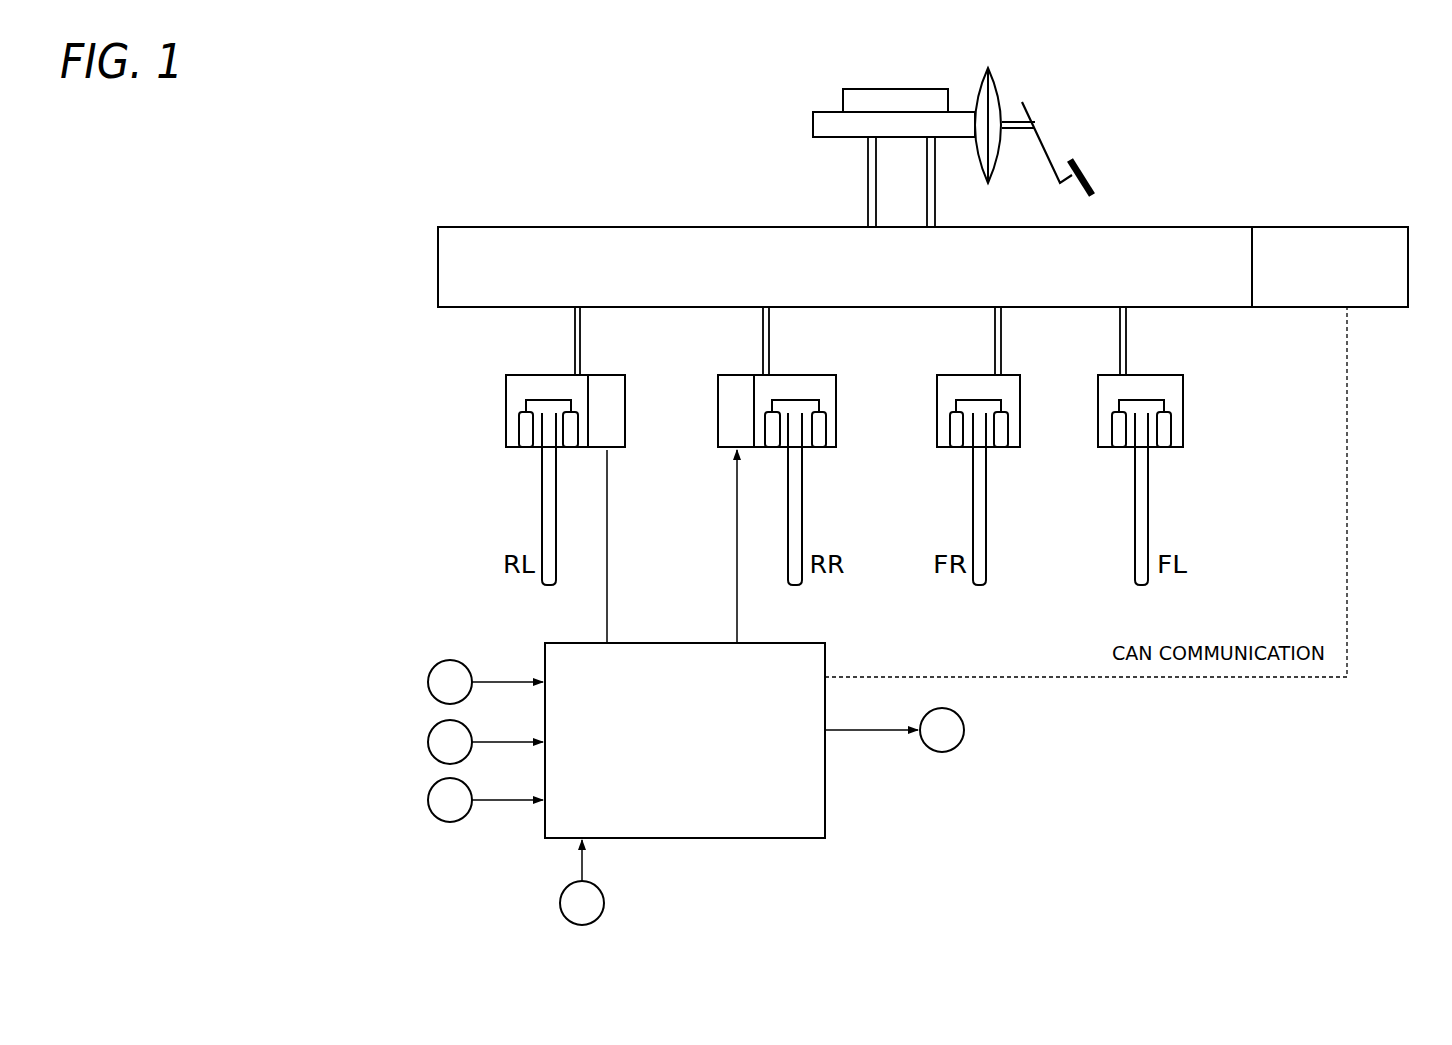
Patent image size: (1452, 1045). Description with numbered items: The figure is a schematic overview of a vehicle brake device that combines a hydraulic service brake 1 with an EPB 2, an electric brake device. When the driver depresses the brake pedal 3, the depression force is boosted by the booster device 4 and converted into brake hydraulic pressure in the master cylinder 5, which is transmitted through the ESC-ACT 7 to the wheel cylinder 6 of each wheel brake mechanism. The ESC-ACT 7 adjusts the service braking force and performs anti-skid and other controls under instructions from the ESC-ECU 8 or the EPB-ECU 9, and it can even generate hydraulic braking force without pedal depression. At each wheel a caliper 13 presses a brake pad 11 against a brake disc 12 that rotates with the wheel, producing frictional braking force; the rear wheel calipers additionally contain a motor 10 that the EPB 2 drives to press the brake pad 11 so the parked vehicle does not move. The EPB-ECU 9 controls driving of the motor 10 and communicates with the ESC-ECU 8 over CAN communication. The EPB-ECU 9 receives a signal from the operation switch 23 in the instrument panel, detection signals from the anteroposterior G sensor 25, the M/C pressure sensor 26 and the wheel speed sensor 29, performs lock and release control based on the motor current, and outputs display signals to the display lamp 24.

The service brake 1 is at (1067, 107).
The EPB 2 is at (629, 503).
The brake pedal 3 is at (1083, 161).
The booster device 4 is at (994, 90).
The master cylinder 5 is at (831, 111).
The wheel cylinder 6 is at (585, 373).
The ESC-ACT 7 is at (1165, 226).
The ESC-ECU 8 is at (1335, 226).
The EPB-ECU 9 is at (762, 840).
The motor 10 is at (626, 388).
The brake pad 11 is at (527, 448).
The brake disc 12 is at (541, 500).
The caliper 13 is at (539, 373).
The operation switch 23 is at (428, 683).
The display lamp 24 is at (964, 729).
The anteroposterior G sensor 25 is at (428, 743).
The M/C pressure sensor 26 is at (428, 801).
The wheel speed sensor 29 is at (604, 902).